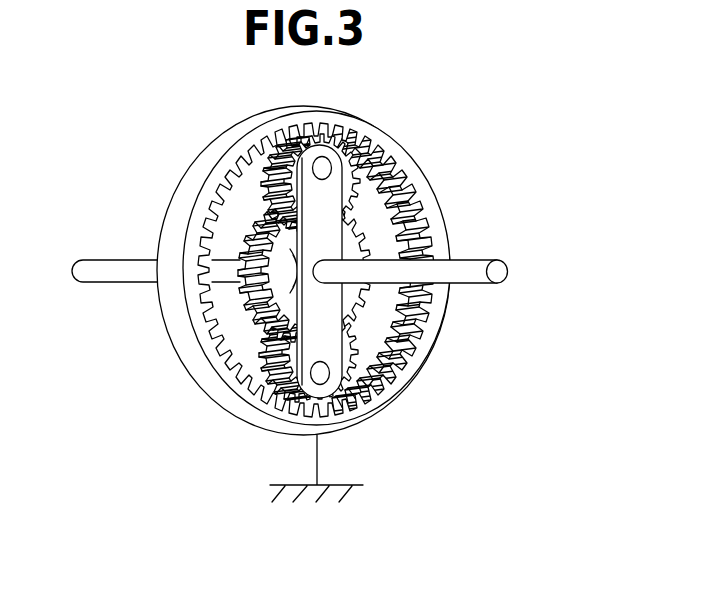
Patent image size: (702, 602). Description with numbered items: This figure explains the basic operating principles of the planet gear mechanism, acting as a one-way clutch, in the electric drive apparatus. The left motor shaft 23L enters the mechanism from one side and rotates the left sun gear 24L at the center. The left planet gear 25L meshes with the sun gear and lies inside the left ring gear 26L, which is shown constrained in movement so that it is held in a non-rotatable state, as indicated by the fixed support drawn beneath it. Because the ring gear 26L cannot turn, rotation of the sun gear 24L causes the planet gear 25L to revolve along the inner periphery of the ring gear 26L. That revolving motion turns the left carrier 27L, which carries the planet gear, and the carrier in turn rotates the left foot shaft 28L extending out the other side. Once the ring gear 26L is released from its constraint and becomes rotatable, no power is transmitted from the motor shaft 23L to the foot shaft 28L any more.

The left motor shaft 23L is at (117, 267).
The left sun gear 24L is at (250, 298).
The left planet gear 25L is at (262, 388).
The left ring gear 26L is at (288, 421).
The left carrier 27L is at (332, 342).
The left foot shaft 28L is at (473, 267).